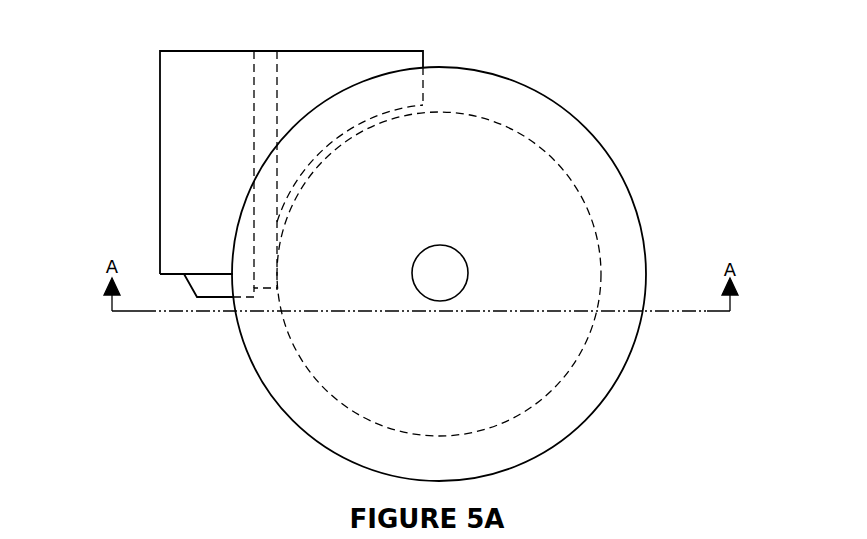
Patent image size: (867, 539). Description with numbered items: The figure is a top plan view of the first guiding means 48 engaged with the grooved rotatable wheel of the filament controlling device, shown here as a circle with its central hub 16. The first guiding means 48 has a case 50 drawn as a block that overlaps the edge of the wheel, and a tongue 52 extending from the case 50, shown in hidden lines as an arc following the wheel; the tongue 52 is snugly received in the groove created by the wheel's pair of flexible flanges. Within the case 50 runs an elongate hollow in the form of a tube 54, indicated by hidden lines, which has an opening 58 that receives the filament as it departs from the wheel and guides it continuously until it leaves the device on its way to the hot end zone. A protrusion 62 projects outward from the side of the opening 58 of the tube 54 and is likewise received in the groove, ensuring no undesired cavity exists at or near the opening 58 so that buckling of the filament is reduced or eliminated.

The hub 16 is at (557, 267).
The first guiding means 48 is at (202, 111).
The case 50 is at (193, 227).
The tongue 52 is at (402, 90).
The tube 54 is at (262, 85).
The opening 58 is at (265, 293).
The protrusion 62 is at (208, 290).